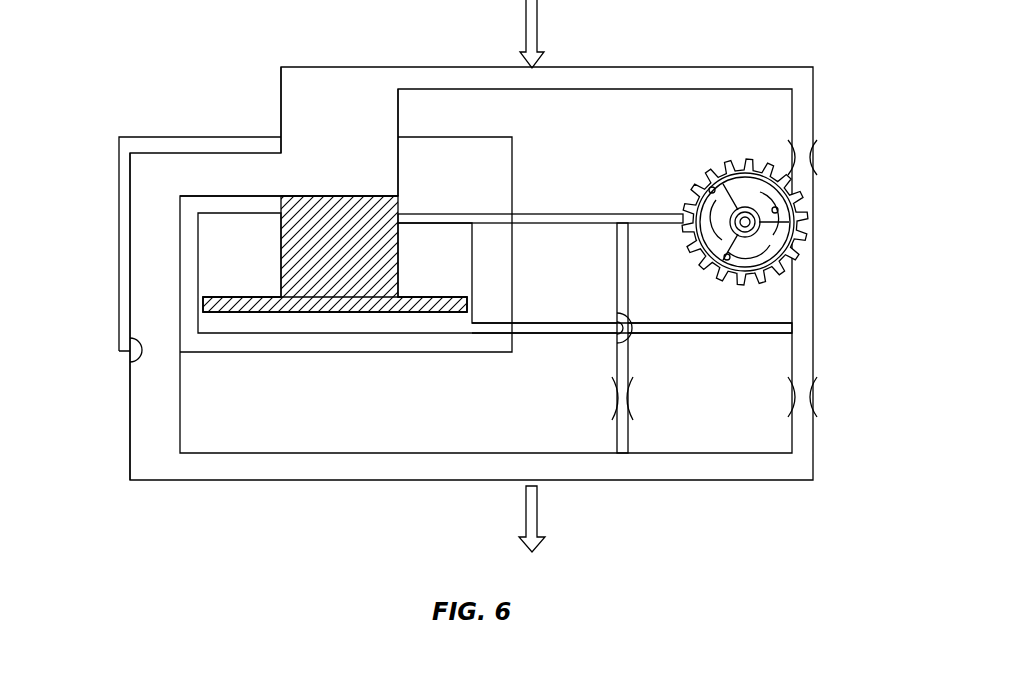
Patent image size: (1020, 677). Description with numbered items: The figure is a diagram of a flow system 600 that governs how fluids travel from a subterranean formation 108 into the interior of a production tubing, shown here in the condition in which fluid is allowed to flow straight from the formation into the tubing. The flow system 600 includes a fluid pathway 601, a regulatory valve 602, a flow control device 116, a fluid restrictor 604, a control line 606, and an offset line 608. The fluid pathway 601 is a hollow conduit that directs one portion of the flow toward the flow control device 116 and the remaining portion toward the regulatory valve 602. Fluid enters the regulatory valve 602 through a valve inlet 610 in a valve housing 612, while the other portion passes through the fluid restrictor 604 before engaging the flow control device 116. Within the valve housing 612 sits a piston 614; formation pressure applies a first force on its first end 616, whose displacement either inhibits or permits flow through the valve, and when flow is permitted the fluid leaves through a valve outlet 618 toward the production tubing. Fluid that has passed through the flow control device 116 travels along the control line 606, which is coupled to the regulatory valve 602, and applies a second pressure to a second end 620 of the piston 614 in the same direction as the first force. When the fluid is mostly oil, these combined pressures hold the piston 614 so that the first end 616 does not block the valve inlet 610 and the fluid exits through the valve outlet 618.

The subterranean formation 108 is at (658, 22).
The flow control device 116 is at (807, 217).
The flow system 600 is at (170, 526).
The fluid pathway 601 is at (770, 67).
The regulatory valve 602 is at (127, 134).
The fluid restrictor 604 is at (812, 157).
The control line 606 is at (622, 213).
The offset line 608 is at (710, 333).
The valve inlet 610 is at (333, 147).
The valve housing 612 is at (130, 230).
The piston 614 is at (320, 255).
The first end 616 is at (333, 196).
The valve outlet 618 is at (128, 360).
The second end 620 is at (430, 313).